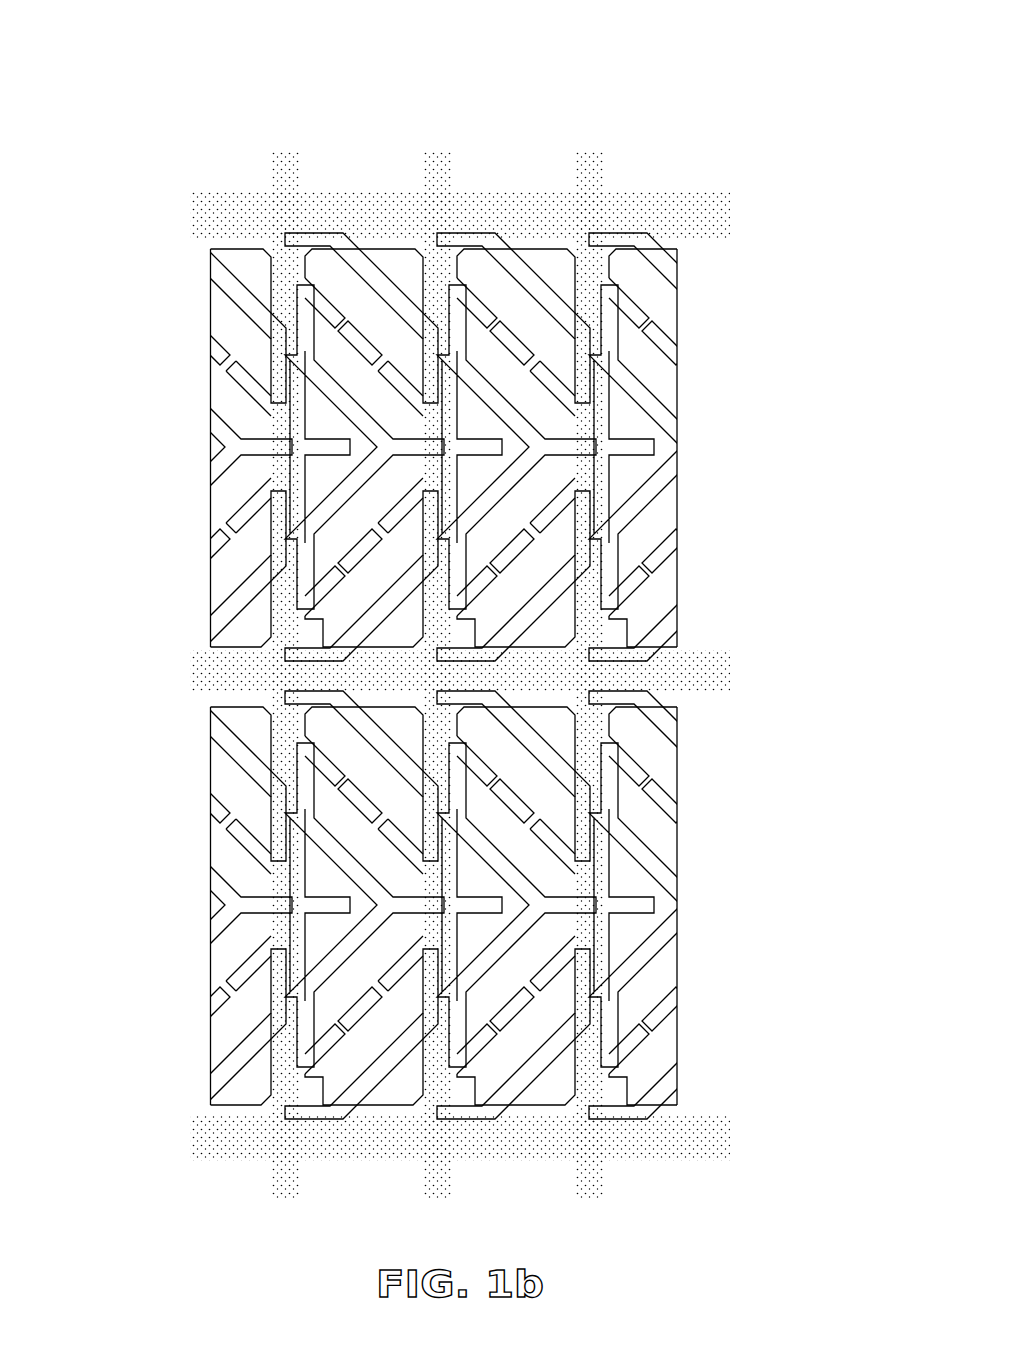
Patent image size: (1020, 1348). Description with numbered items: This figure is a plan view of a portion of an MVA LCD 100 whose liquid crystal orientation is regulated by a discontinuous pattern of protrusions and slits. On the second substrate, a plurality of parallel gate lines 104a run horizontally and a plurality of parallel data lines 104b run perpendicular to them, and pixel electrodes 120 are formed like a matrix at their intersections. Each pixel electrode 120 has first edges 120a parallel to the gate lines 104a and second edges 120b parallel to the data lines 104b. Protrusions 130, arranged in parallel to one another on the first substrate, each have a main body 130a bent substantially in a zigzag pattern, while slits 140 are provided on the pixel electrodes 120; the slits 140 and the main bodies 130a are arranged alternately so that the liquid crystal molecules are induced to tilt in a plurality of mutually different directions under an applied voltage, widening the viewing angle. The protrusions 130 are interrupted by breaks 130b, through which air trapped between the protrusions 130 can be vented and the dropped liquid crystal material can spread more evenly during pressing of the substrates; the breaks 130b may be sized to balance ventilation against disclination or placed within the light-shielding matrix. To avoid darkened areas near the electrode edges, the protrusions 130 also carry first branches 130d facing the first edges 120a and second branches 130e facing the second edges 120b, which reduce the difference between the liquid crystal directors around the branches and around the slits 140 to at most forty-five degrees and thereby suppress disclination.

The MVA LCD 100 is at (67, 72).
The gate lines 104a is at (716, 216).
The data lines 104b is at (603, 152).
The pixel electrode 120 is at (398, 252).
The first edges 120a is at (377, 249).
The second edges 120b is at (430, 285).
The protrusion 130 is at (548, 288).
The main body 130a is at (513, 262).
The breaks 130b is at (492, 683).
The first branches 130d is at (317, 233).
The second branches 130e is at (420, 356).
The slits 140 is at (585, 545).